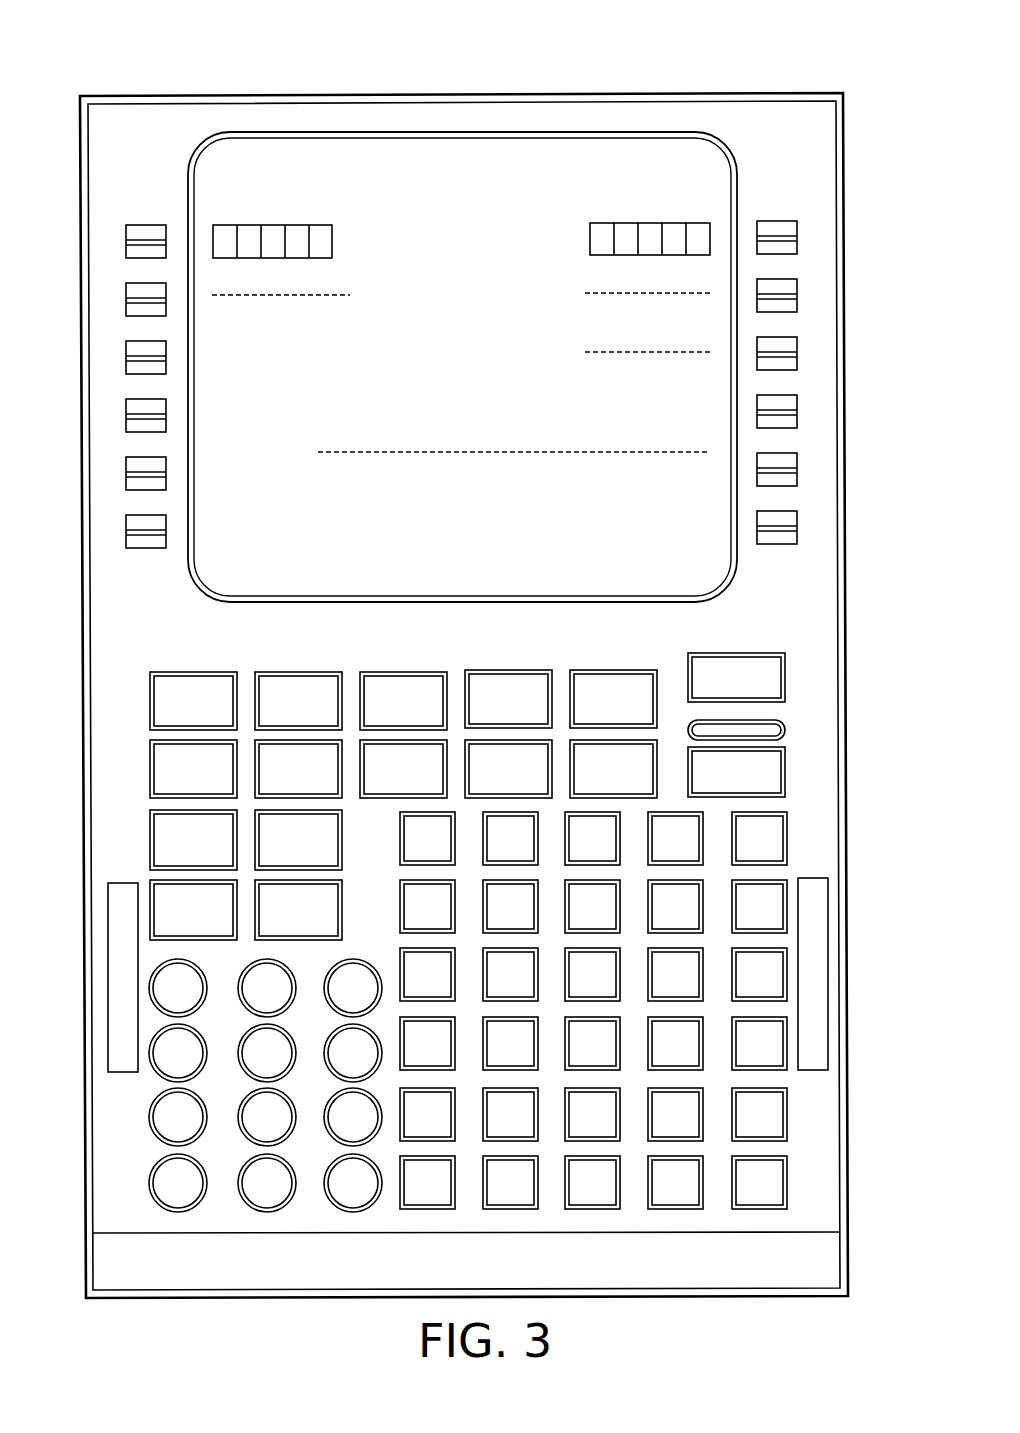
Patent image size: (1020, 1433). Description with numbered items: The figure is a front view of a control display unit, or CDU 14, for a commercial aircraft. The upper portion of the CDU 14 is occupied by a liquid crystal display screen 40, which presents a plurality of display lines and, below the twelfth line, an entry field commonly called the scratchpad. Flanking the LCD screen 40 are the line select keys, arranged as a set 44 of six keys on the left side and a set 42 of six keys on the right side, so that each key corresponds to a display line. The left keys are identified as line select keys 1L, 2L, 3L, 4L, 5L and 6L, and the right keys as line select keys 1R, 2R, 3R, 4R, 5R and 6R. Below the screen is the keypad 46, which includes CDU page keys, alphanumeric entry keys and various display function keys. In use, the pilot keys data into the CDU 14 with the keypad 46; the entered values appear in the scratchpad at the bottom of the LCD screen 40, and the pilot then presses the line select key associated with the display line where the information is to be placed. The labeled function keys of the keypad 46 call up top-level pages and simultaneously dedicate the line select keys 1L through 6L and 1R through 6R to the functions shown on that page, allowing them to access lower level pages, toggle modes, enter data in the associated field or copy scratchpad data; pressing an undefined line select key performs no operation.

The control display unit (CDU) 14 is at (175, 85).
The liquid crystal display (LCD) screen 40 is at (468, 130).
The set of right line select keys 42 is at (770, 145).
The set of left line select keys 44 is at (130, 183).
The keypad 46 is at (135, 650).
The line select key 1L is at (126, 233).
The line select key 2L is at (126, 291).
The line select key 3L is at (126, 349).
The line select key 4L is at (126, 407).
The line select key 5L is at (126, 465).
The line select key 6L is at (126, 523).
The line select key 1R is at (797, 228).
The line select key 2R is at (797, 286).
The line select key 3R is at (797, 344).
The line select key 4R is at (797, 402).
The line select key 5R is at (797, 460).
The line select key 6R is at (797, 518).